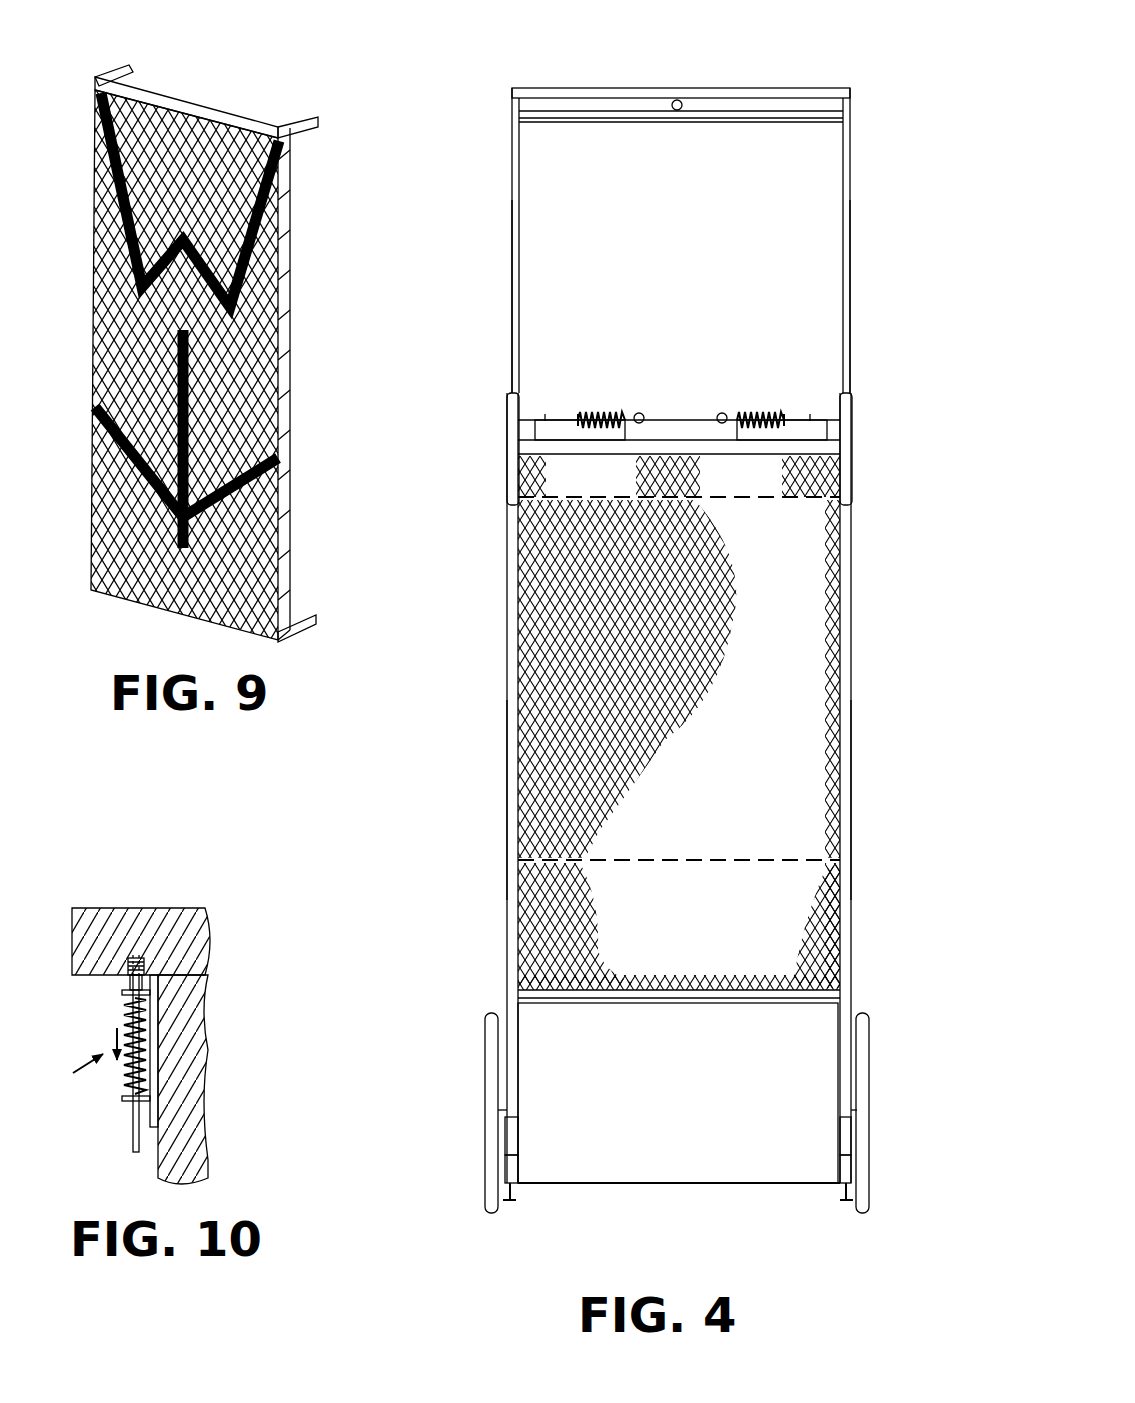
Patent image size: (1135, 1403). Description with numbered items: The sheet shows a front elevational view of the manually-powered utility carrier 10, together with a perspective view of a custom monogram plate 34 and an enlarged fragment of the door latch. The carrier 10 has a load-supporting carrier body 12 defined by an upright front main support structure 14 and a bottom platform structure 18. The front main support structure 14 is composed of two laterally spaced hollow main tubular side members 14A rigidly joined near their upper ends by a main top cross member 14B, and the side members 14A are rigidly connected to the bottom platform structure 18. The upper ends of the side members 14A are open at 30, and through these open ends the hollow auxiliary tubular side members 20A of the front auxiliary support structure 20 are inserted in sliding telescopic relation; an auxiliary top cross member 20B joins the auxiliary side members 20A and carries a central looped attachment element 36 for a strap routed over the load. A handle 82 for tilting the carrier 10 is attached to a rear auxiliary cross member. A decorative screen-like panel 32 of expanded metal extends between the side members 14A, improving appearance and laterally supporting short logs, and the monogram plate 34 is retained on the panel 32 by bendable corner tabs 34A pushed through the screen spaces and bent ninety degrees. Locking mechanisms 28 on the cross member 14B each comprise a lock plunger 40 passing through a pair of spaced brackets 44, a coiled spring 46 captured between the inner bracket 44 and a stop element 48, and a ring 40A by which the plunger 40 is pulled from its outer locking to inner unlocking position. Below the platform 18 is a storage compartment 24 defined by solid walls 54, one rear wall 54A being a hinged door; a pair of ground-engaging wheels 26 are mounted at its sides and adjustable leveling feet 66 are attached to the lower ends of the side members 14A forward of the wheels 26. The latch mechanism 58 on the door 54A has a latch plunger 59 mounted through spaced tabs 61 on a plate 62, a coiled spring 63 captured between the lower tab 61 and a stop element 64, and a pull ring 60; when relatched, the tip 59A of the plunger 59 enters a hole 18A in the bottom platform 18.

In FIG. 4, the utility carrier 10 is at (808, 60).
In FIG. 4, the carrier body 12 is at (507, 655).
In FIG. 4, the front main support structure 14 is at (853, 650).
In FIG. 4, the main tubular side members 14A is at (852, 780).
In FIG. 4, the main top cross member 14B is at (830, 448).
In FIG. 10, the bottom platform structure 18 is at (95, 906).
In FIG. 10, the hole 18A is at (147, 960).
In FIG. 4, the front auxiliary support structure 20 is at (508, 181).
In FIG. 4, the auxiliary tubular side members 20A is at (851, 236).
In FIG. 4, the auxiliary top cross member 20B is at (548, 118).
In FIG. 4, the storage compartment 24 is at (661, 1185).
In FIG. 4, the ground-engaging wheels 26 is at (488, 1055).
In FIG. 4, the locking mechanisms 28 is at (732, 380).
In FIG. 4, the open upper ends 30 is at (512, 390).
In FIG. 4, the screen-like panels 32 is at (548, 745).
In FIG. 9, the custom monogram plate 34 is at (293, 353).
In FIG. 9, the bendable corner tabs 34A is at (133, 73).
In FIG. 4, the attachment element 36 is at (690, 103).
In FIG. 4, the lock plunger 40 is at (545, 415).
In FIG. 4, the ring 40A is at (717, 417).
In FIG. 4, the brackets 44 is at (628, 432).
In FIG. 4, the coiled spring 46 is at (612, 412).
In FIG. 4, the stop element 48 is at (580, 418).
In FIG. 4, the solid walls 54 is at (683, 1108).
In FIG. 10, the rear wall door 54A is at (215, 1080).
In FIG. 10, the latch mechanism 58 is at (79, 1077).
In FIG. 10, the latch plunger 59 is at (132, 983).
In FIG. 10, the tip 59A is at (137, 950).
In FIG. 10, the pull ring 60 is at (131, 1133).
In FIG. 10, the tabs 61 is at (150, 992).
In FIG. 10, the plate 62 is at (158, 1108).
In FIG. 10, the coiled spring 63 is at (150, 1042).
In FIG. 10, the stop element 64 is at (128, 1003).
In FIG. 4, the adjustable leveling feet 66 is at (513, 1190).
In FIG. 4, the handle 82 is at (565, 88).